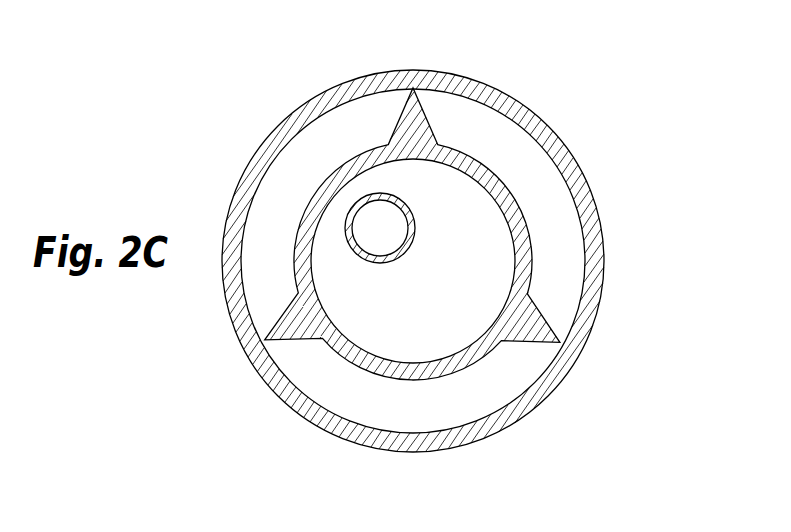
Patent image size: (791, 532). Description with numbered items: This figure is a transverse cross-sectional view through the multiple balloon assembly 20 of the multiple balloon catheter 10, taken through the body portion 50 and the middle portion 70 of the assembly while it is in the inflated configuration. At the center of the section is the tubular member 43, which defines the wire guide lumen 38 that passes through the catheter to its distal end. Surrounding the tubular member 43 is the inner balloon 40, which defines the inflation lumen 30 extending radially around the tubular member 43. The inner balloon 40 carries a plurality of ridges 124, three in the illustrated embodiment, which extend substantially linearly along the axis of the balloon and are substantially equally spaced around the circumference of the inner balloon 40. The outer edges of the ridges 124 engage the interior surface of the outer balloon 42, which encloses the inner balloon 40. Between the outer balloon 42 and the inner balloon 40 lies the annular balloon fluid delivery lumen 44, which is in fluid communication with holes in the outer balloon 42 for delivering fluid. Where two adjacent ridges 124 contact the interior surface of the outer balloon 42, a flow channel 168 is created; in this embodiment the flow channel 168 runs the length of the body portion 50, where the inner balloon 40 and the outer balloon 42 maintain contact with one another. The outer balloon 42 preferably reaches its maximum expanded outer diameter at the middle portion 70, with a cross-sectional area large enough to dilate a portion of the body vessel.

The multiple balloon catheter 10 is at (622, 142).
The multiple balloon assembly 20 is at (242, 93).
The inflation lumen 30 is at (481, 285).
The wire guide lumen 38 is at (392, 240).
The inner balloon 40 is at (452, 143).
The outer balloon 42 is at (537, 111).
The tubular member 43 is at (348, 248).
The annular balloon fluid delivery lumen 44 is at (423, 420).
The body portion 50 is at (532, 279).
The middle portion 70 is at (360, 71).
The ridges 124 is at (297, 341).
The flow channel 168 is at (280, 208).